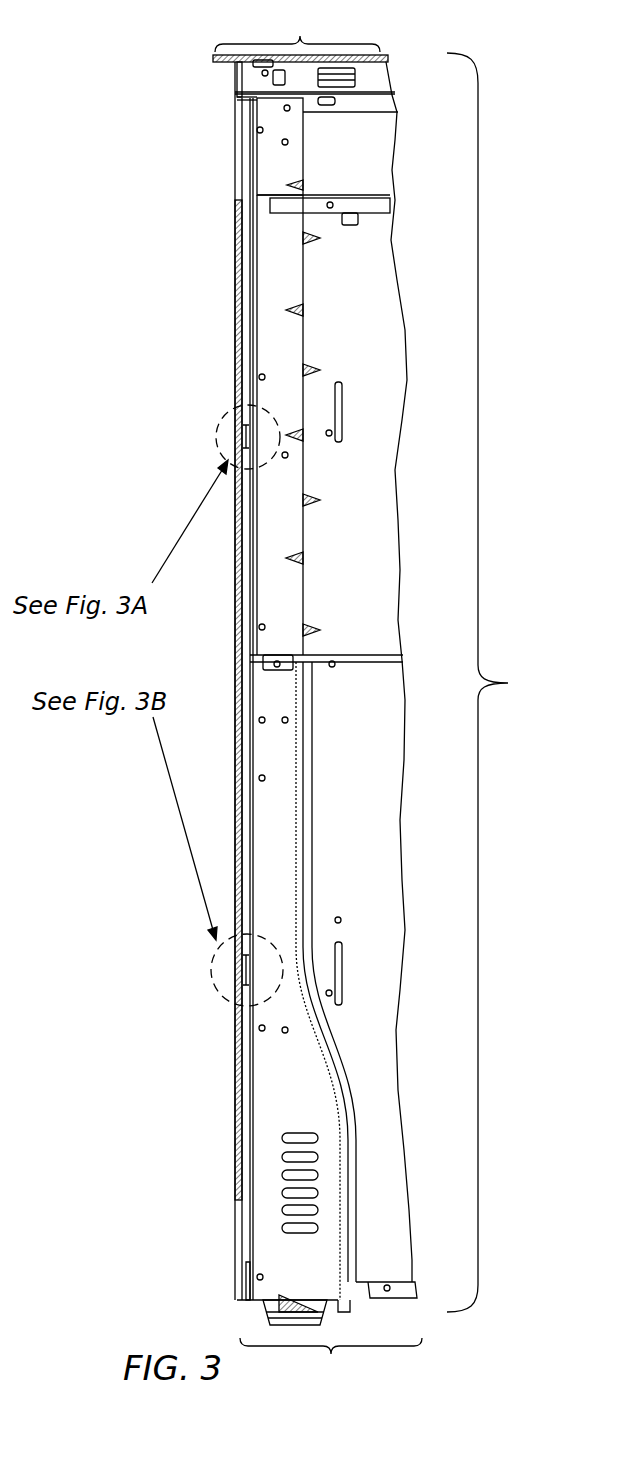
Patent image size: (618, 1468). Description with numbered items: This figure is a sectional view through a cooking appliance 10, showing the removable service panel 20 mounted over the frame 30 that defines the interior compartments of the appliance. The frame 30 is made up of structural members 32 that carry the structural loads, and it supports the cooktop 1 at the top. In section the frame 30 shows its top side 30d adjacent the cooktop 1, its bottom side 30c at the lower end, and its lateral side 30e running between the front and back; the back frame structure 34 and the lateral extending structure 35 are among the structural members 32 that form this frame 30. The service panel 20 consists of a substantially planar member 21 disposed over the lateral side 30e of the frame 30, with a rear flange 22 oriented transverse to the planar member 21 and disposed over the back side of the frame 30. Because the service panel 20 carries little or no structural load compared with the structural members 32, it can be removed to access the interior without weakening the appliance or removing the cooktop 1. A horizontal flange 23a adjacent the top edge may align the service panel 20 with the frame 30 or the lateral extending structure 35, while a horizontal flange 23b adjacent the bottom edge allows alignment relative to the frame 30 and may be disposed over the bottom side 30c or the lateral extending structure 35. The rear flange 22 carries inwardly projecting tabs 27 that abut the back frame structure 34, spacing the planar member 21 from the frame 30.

The cooktop 1 is at (385, 54).
The cooking appliance 10 is at (420, 66).
The service panel 20 is at (214, 146).
The planar member 21 is at (237, 302).
The rear flange 22 is at (245, 266).
The horizontal flange 23a is at (233, 108).
The horizontal flange 23b is at (243, 1306).
The tabs 27 is at (232, 440).
The frame 30 is at (284, 282).
The bottom side 30c is at (331, 1360).
The top side 30d is at (297, 30).
The lateral side 30e is at (498, 682).
The structural members 32 is at (278, 340).
The back frame structure 34 is at (345, 1140).
The lateral extending structure 35 is at (246, 1320).